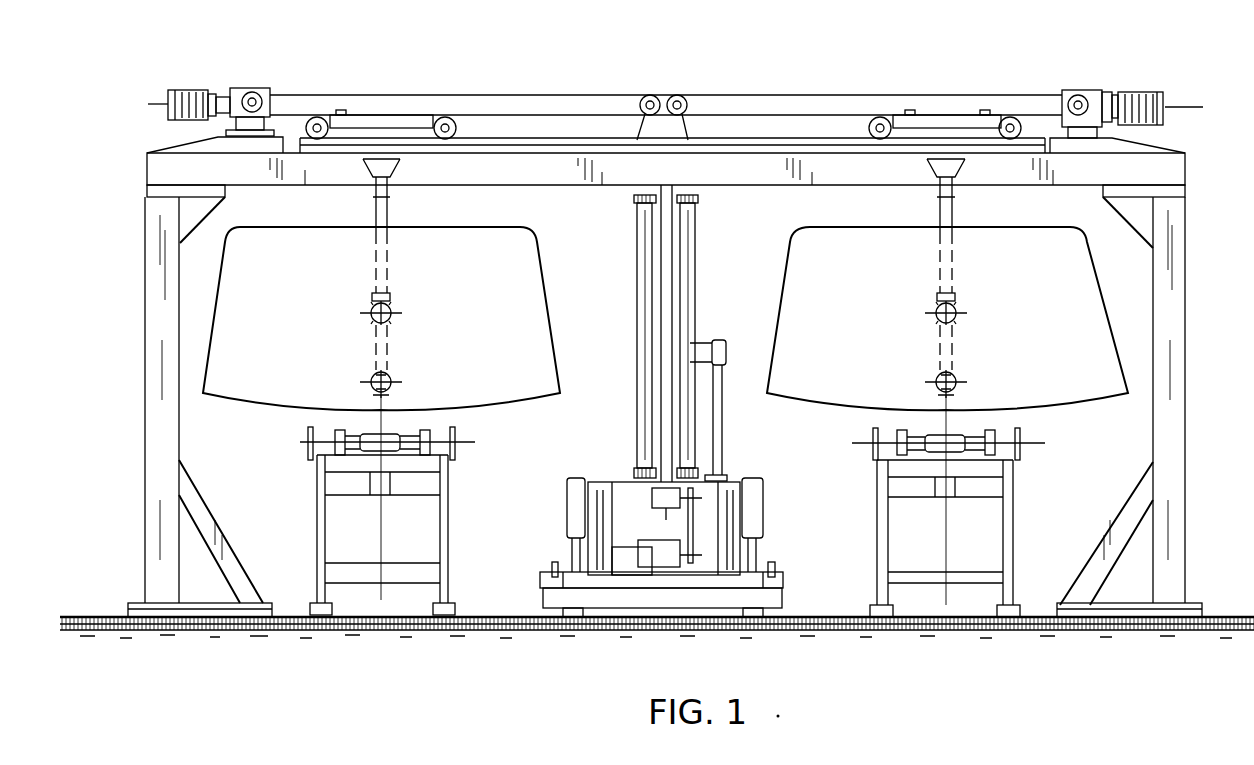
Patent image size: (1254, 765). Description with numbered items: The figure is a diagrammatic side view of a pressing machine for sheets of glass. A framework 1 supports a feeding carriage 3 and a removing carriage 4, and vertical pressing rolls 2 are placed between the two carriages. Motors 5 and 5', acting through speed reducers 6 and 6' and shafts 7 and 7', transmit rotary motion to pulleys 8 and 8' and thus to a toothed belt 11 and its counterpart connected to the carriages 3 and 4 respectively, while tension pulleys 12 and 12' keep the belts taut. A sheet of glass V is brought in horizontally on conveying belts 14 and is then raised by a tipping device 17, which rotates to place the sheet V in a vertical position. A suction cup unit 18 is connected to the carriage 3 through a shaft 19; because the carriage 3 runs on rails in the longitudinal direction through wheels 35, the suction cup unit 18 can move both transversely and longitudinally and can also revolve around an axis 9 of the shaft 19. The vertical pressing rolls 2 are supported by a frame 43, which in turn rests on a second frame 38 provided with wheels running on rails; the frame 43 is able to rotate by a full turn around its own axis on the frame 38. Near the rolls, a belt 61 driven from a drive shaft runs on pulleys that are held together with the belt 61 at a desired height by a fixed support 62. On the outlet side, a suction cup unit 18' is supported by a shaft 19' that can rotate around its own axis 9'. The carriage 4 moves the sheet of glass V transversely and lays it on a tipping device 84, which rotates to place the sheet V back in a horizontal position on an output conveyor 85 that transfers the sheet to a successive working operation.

The framework 1 is at (1173, 337).
The vertical pressing rolls 2 is at (682, 218).
The feeding carriage 3 is at (940, 127).
The removing carriage 4 is at (367, 123).
The motor 5 is at (1152, 84).
The motor 5' is at (181, 95).
The speed reducer 6 is at (1067, 98).
The speed reducer 6' is at (233, 89).
The shaft 7 is at (1075, 78).
The shaft 7' is at (247, 72).
The pulley 8 is at (1090, 76).
The pulley 8' is at (273, 79).
The axis 9 is at (970, 369).
The axis 9' is at (403, 370).
The toothed belt 11 is at (440, 93).
The tension pulley 12 is at (699, 93).
The tension pulley 12' is at (635, 93).
The conveying belts 14 is at (1007, 545).
The tipping device 17 is at (987, 433).
The suction cup unit 18 is at (974, 305).
The suction cup unit 18' is at (408, 301).
The shaft 19 is at (974, 401).
The shaft 19' is at (414, 398).
The wheels 35 is at (870, 118).
The second frame 38 is at (670, 598).
The frame 43 is at (600, 560).
The belt 61 is at (700, 353).
The fixed support 62 is at (723, 353).
The tipping device 84 is at (433, 432).
The output conveyor 85 is at (447, 542).
The sheet of glass V is at (532, 309).